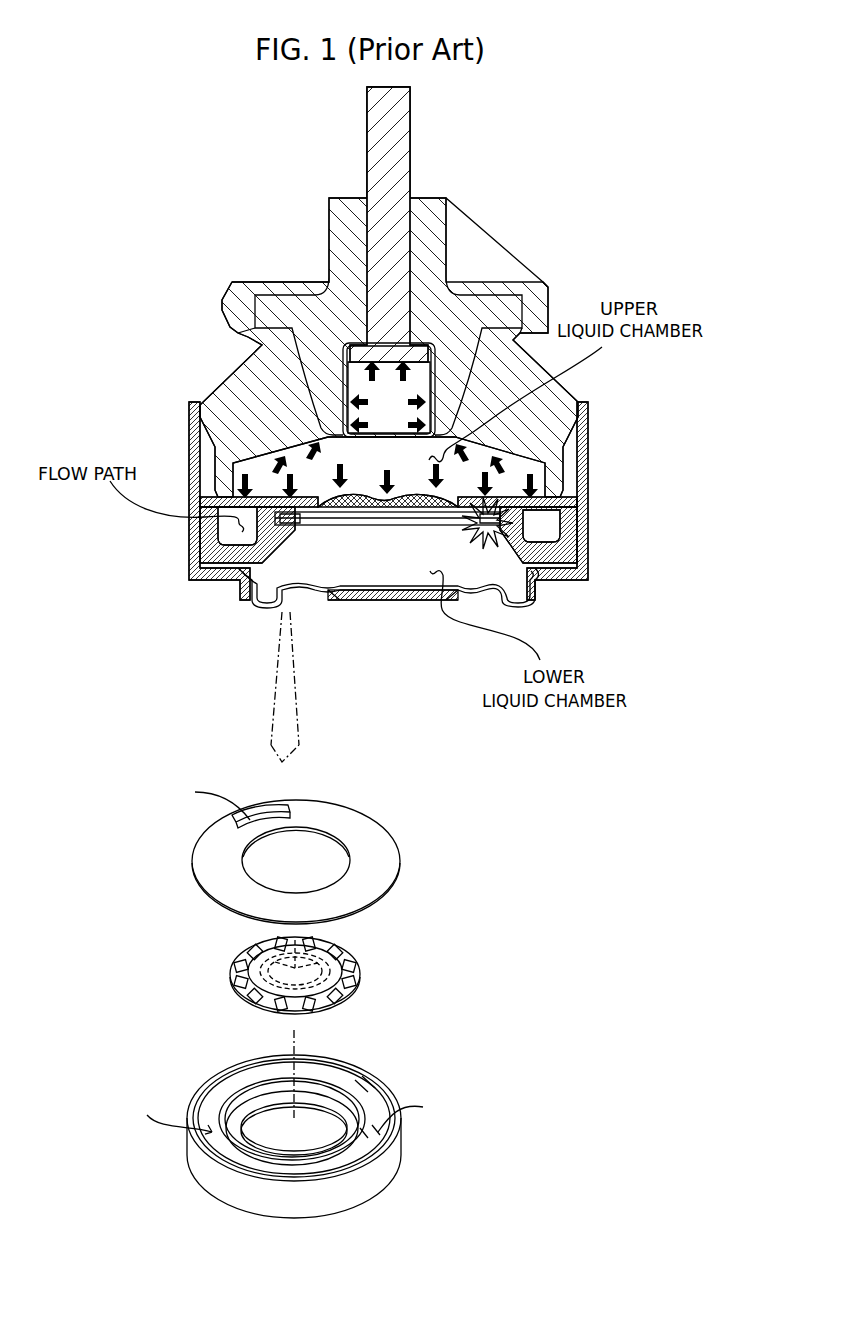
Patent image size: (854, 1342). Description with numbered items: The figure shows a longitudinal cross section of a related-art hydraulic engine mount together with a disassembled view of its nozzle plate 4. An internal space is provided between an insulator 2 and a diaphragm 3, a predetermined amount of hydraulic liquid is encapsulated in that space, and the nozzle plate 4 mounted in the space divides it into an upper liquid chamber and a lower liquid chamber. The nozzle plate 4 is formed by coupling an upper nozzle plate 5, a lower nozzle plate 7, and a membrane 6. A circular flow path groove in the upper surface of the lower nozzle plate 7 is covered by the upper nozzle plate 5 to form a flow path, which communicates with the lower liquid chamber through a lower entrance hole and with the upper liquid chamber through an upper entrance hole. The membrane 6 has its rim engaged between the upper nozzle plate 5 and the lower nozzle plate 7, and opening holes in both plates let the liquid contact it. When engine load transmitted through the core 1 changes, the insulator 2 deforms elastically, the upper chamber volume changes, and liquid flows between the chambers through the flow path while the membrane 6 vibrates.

The core 1 is at (441, 311).
The insulator 2 is at (253, 392).
The diaphragm 3 is at (372, 601).
The nozzle plate 4 is at (568, 494).
The upper nozzle plate 5 is at (205, 858).
The membrane 6 is at (348, 957).
The lower nozzle plate 7 is at (337, 1066).